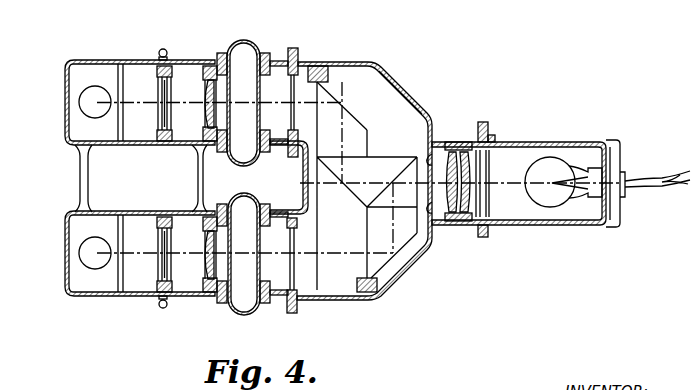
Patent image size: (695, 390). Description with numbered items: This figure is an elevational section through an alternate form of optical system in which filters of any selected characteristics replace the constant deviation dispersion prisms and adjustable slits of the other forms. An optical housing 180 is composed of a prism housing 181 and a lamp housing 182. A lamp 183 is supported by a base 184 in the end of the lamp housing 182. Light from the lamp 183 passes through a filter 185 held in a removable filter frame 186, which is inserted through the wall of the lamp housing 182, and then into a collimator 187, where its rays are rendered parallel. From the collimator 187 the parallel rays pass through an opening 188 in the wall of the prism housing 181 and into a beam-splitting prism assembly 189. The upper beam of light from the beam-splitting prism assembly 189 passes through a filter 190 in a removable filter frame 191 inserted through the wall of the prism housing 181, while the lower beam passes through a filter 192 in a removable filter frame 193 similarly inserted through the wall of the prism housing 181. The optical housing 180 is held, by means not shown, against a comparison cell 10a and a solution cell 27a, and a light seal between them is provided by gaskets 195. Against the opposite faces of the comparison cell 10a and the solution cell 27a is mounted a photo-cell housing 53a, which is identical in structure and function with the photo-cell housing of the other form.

The photo-cell housing 53a is at (76, 187).
The comparison cell 10a is at (234, 40).
The solution cell 27a is at (235, 316).
The gaskets 195 is at (268, 171).
The removable filter frame 191 is at (295, 48).
The filter 190 is at (297, 88).
The removable filter frame 193 is at (295, 318).
The filter 192 is at (297, 277).
The beam-splitting prism assembly 189 is at (342, 100).
The optical housing 180 is at (418, 97).
The prism housing 181 is at (398, 80).
The opening 188 is at (430, 158).
The removable filter frame 186 is at (485, 120).
The collimator 187 is at (457, 215).
The filter 185 is at (488, 204).
The lamp housing 182 is at (565, 141).
The lamp 183 is at (562, 206).
The base 184 is at (622, 213).